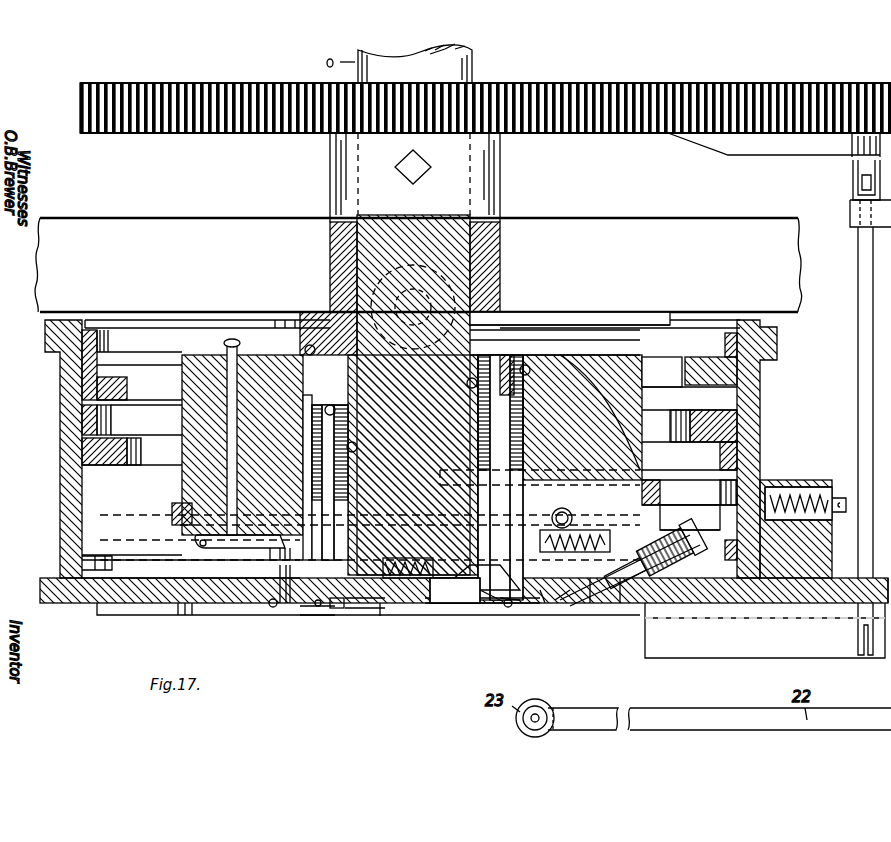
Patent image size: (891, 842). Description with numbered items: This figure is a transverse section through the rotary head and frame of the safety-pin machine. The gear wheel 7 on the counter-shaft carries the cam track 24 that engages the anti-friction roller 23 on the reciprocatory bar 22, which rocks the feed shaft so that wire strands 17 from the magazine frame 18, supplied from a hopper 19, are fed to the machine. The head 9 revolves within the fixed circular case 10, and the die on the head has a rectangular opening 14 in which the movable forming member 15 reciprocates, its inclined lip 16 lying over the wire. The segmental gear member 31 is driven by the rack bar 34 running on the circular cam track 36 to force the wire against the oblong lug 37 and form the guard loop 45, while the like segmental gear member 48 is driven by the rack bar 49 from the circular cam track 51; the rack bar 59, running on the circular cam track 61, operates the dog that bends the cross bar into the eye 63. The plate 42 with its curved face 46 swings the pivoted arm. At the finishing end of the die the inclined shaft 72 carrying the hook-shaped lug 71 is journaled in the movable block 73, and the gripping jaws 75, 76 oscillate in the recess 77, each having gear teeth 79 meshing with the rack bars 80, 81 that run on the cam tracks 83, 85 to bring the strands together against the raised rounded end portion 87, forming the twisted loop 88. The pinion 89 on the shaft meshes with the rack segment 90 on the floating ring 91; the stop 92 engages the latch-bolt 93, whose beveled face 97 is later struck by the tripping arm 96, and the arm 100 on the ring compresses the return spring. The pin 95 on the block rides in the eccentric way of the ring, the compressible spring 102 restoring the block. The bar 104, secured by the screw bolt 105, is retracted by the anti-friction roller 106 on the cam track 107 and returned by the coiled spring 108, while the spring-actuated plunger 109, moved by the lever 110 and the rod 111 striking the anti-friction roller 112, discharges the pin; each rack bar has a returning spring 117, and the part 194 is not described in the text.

The gear wheel 7 is at (210, 133).
The head 9 is at (185, 488).
The circular shell or case 10 is at (66, 489).
The rectangular opening 14 is at (405, 603).
The movable forming member 15 is at (382, 616).
The inclined lip 16 is at (340, 608).
The wire strand 17 is at (490, 606).
The magazine frame 18 is at (640, 466).
The hopper 19 is at (510, 548).
The reciprocatory bar 22 is at (858, 323).
The anti-friction roller 23 is at (855, 172).
The cam track 24 is at (795, 155).
The segmental gear member 31 is at (316, 477).
The rack bar 34 is at (455, 465).
The circular cam track 36 is at (82, 413).
The oblong lug 37 is at (305, 618).
The plate 42 is at (135, 612).
The guard loop 45 is at (290, 605).
The curved face 46 is at (468, 630).
The segmental gear member 48 is at (352, 462).
The rack bar 49 is at (348, 490).
The circular cam track 51 is at (82, 447).
The rack bar 59 is at (300, 322).
The circular cam track 61 is at (135, 330).
The eye 63 is at (318, 608).
The hook-shaped lug 71 is at (555, 606).
The inclined shaft 72 is at (625, 606).
The movable block 73 is at (594, 606).
The gripping jaw 75 is at (500, 477).
The gripping jaw 76 is at (487, 577).
The recess 77 is at (538, 606).
The gear teeth segment 79 is at (565, 355).
The rack bar 80 is at (490, 355).
The rack bar 81 is at (520, 355).
The cam track 83 is at (82, 362).
The cam track 85 is at (82, 386).
The raised rounded end portion 87 is at (460, 603).
The twisted loop 88 is at (508, 608).
The pinion 89 is at (700, 600).
The rack segment 90 is at (710, 510).
The floating ring 91 is at (172, 515).
The stop 92 is at (712, 525).
The latch-bolt 93 is at (787, 529).
The pin 95 is at (700, 623).
The tripping arm 96 is at (718, 500).
The beveled face 97 is at (765, 482).
The arm 100 is at (574, 520).
The compressible spring 102 is at (574, 551).
The bar 104 is at (155, 560).
The screw bolt 105 is at (368, 610).
The anti-friction roller 106 is at (95, 556).
The cam track 107 is at (738, 600).
The coiled spring 108 is at (437, 603).
The spring-actuated plunger 109 is at (268, 606).
The lever 110 is at (235, 548).
The rod 111 is at (224, 343).
The anti-friction roller 112 is at (450, 292).
The returning spring 117 is at (466, 383).
The block 194 is at (660, 500).